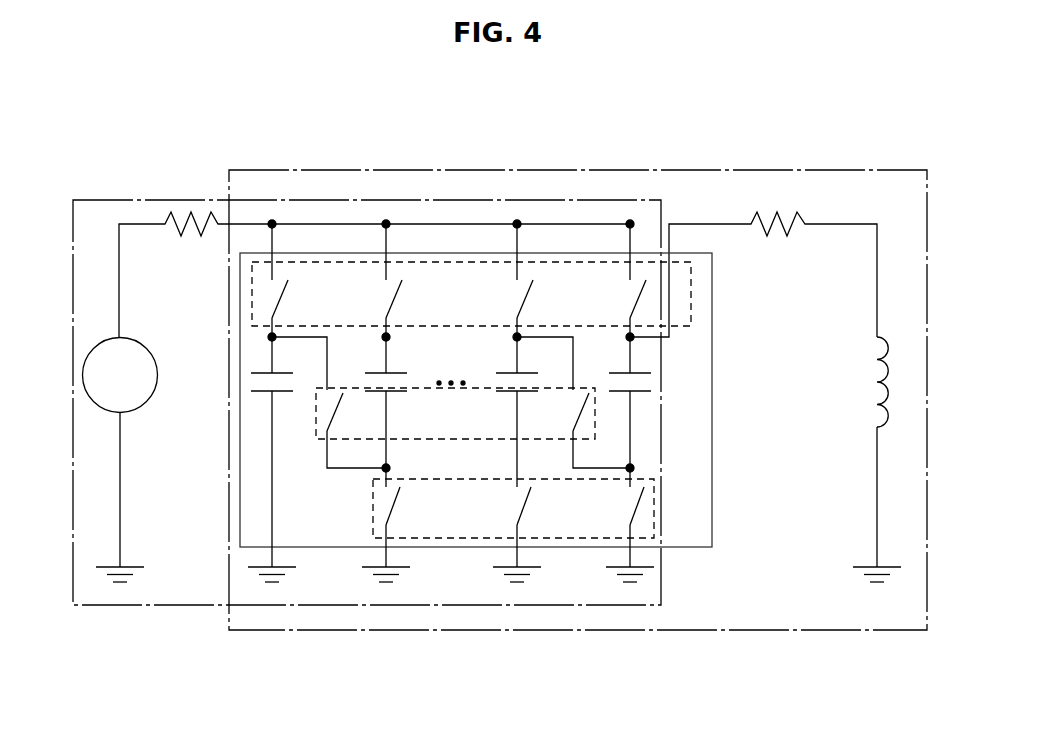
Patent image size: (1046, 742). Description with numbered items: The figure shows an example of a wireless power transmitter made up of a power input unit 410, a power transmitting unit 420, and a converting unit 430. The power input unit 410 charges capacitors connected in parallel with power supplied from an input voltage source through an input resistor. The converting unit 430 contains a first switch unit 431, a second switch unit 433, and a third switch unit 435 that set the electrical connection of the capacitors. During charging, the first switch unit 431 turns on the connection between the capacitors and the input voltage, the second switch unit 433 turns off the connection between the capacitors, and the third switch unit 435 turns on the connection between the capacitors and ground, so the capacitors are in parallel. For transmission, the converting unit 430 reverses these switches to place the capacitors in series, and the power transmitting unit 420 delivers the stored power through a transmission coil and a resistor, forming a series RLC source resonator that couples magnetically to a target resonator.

The power input unit 410 is at (152, 200).
The power transmitting unit 420 is at (575, 170).
The converting unit 430 is at (712, 362).
The first switch unit 431 is at (691, 292).
The second switch unit 433 is at (595, 422).
The third switch unit 435 is at (654, 505).